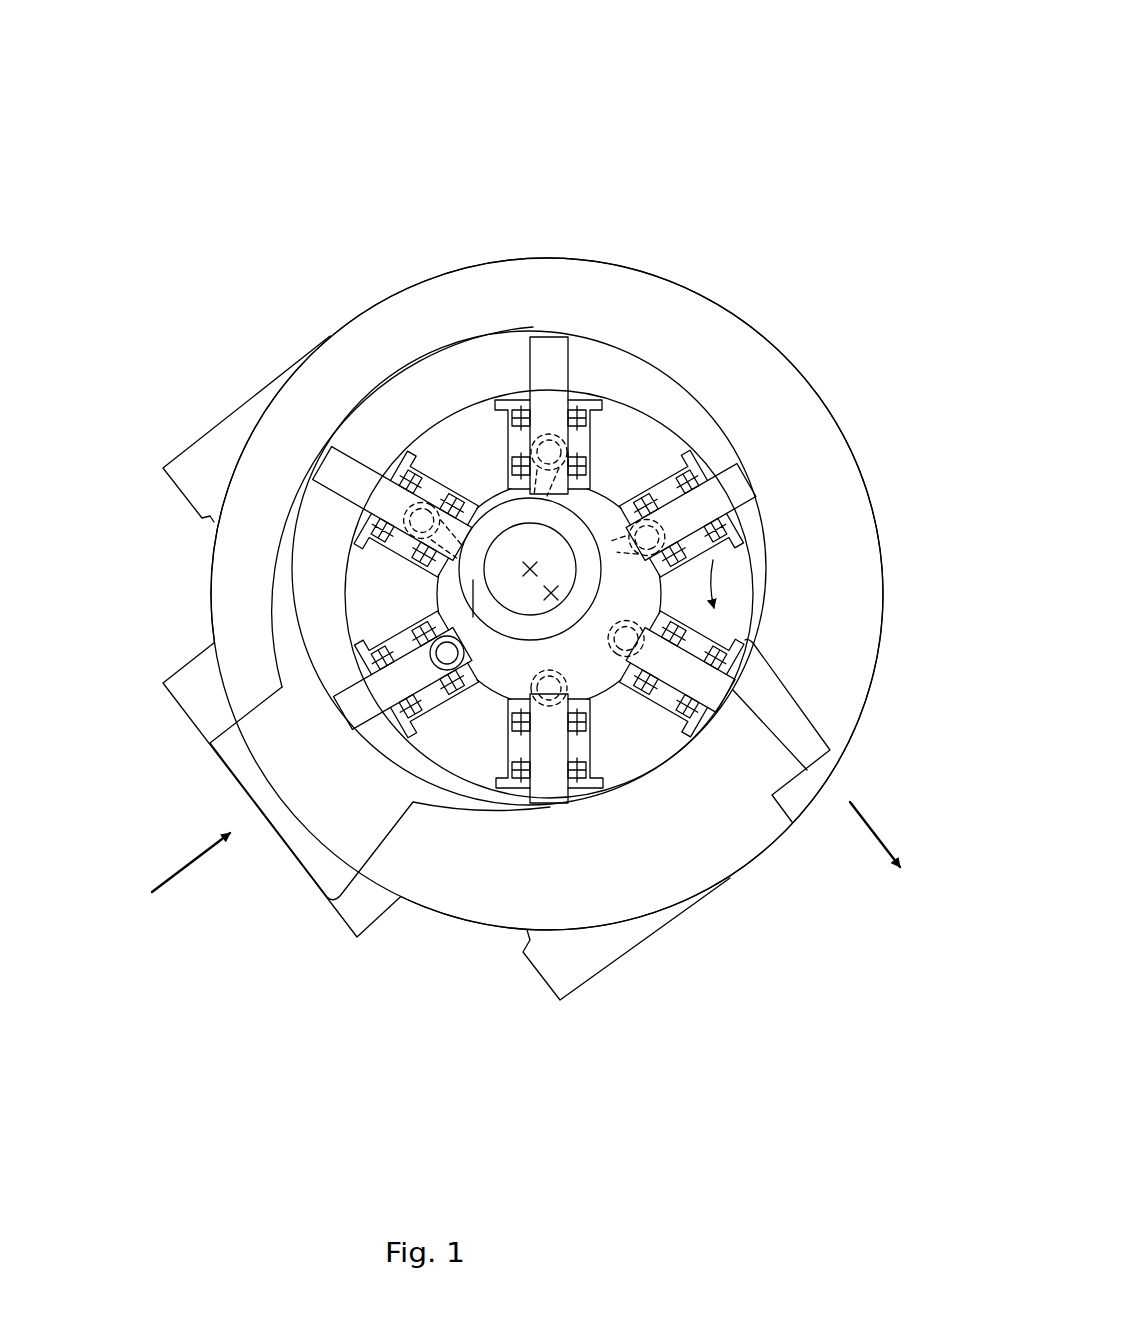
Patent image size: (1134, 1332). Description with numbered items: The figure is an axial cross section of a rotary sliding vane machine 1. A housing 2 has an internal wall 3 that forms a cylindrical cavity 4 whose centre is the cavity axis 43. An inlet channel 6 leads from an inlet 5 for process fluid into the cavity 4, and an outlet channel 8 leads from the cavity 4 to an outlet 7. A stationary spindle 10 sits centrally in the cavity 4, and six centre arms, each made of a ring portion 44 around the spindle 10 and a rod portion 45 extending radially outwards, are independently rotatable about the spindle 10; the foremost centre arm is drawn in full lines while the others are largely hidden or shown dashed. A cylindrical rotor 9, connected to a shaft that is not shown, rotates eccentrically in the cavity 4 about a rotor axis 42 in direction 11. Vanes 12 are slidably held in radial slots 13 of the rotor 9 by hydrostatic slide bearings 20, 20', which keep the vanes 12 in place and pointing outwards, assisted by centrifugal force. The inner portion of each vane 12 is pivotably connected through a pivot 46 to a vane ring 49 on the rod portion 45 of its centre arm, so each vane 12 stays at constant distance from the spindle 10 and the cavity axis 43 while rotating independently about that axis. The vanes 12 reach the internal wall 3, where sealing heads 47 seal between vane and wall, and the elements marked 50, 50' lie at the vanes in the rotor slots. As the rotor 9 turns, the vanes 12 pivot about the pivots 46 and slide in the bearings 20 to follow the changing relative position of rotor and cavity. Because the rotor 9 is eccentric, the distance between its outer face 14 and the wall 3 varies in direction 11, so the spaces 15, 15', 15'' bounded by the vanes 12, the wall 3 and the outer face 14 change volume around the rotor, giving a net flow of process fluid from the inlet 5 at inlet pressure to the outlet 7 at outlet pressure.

The rotary sliding vane machine 1 is at (690, 90).
The housing 2 is at (690, 857).
The internal wall 3 is at (755, 548).
The cylindrical cavity 4 is at (713, 443).
The inlet 5 is at (240, 758).
The inlet channel 6 is at (280, 630).
The outlet 7 is at (800, 802).
The outlet channel 8 is at (793, 708).
The cylindrical rotor 9 is at (740, 570).
The stationary spindle 10 is at (497, 563).
The direction of rotation 11 is at (727, 588).
The vane 12 is at (347, 488).
The radial slot 13 is at (378, 477).
The outer face 14 is at (512, 453).
The space 15 is at (345, 610).
The space 15' is at (506, 337).
The space 15'' is at (611, 341).
The hydrostatic slide bearing 20 is at (492, 340).
The hydrostatic slide bearing 20' is at (634, 336).
The rotor axis 42 is at (552, 588).
The cavity axis 43 is at (533, 560).
The ring portion 44 is at (478, 622).
The rod portion 45 is at (470, 637).
The pivot 46 is at (443, 660).
The sealing head 47 is at (550, 337).
The vane ring 49 is at (440, 655).
The seal 50 is at (441, 343).
The seal 50' is at (659, 342).